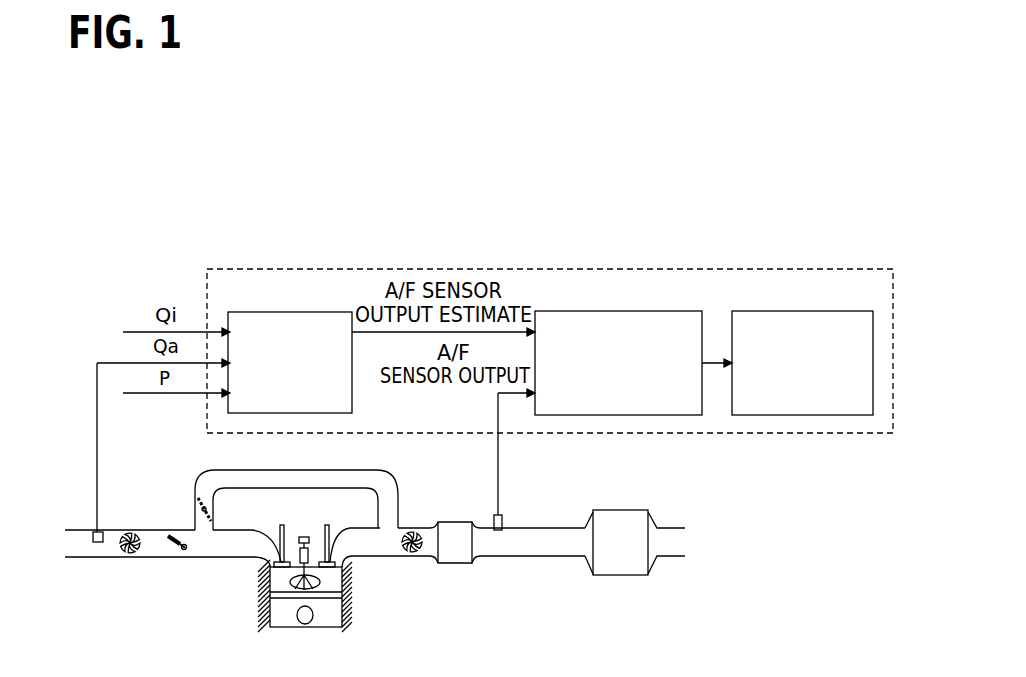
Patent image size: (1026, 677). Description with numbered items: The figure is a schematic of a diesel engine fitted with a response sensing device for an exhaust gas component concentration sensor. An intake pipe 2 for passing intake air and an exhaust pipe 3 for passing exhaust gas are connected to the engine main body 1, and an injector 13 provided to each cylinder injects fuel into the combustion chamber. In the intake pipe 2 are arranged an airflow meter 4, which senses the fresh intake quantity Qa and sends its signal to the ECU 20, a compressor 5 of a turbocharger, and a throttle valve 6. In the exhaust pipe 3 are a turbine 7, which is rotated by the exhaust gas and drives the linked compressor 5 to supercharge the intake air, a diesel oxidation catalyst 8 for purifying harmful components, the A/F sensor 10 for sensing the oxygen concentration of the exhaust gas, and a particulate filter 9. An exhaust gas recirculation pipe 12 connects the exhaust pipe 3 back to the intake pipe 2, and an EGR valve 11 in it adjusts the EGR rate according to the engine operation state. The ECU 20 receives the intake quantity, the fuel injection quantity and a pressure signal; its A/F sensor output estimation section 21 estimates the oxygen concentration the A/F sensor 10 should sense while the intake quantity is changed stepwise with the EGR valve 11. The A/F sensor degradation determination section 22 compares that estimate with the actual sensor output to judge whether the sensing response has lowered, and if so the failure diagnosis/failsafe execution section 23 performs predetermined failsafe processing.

The engine main body 1 is at (352, 615).
The intake pipe 2 is at (85, 558).
The exhaust pipe 3 is at (522, 556).
The airflow meter 4 is at (94, 530).
The compressor 5 is at (130, 533).
The throttle valve 6 is at (178, 549).
The turbine 7 is at (415, 557).
The diesel oxidation catalyst 8 is at (457, 563).
The particulate filter 9 is at (613, 510).
The A/F sensor 10 is at (502, 513).
The EGR valve 11 is at (197, 502).
The exhaust gas recirculation pipe 12 is at (398, 478).
The injector 13 is at (305, 535).
The ECU 20 is at (440, 266).
The A/F sensor output estimation section 21 is at (295, 312).
The A/F sensor degradation determination section 22 is at (603, 311).
The failure diagnosis/failsafe execution section 23 is at (800, 311).